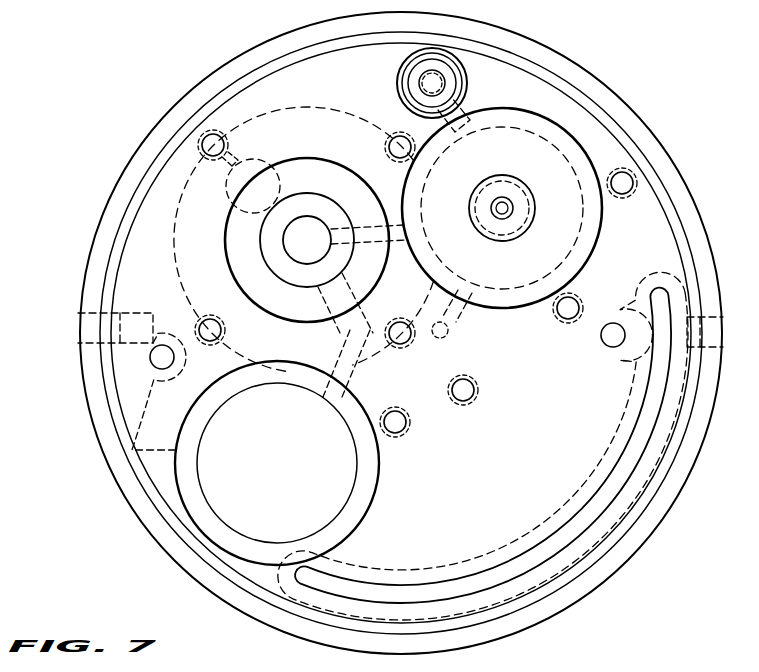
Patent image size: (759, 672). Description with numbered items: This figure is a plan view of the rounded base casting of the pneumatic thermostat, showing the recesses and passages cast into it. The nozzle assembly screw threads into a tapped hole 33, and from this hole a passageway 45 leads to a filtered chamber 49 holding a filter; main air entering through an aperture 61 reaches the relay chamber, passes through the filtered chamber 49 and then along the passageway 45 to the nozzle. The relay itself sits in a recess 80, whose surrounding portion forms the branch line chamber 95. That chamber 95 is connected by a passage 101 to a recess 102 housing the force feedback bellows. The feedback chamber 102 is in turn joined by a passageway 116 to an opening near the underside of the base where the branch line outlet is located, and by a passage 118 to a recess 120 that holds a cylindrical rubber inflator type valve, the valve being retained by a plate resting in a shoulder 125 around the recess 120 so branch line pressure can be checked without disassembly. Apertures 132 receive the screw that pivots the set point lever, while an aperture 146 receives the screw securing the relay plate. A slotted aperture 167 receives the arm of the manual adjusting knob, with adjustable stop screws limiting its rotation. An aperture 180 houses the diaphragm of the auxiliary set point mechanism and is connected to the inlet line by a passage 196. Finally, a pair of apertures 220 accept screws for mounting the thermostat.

The tapped hole 33 is at (202, 149).
The passageway 45 is at (194, 178).
The filtered chamber 49 is at (184, 198).
The aperture 61 is at (335, 335).
The recess 80 is at (229, 258).
The branch line chamber 95 is at (302, 198).
The passage 101 is at (376, 254).
The recess 102 is at (524, 116).
The passageway 116 is at (455, 314).
The passage 118 is at (464, 101).
The recess 120 is at (453, 76).
The shoulder 125 is at (410, 72).
The apertures 132 is at (458, 392).
The aperture 146 is at (400, 345).
The slotted aperture 167 is at (588, 520).
The aperture 180 is at (343, 490).
The passage 196 is at (355, 378).
The apertures 220 is at (162, 360).